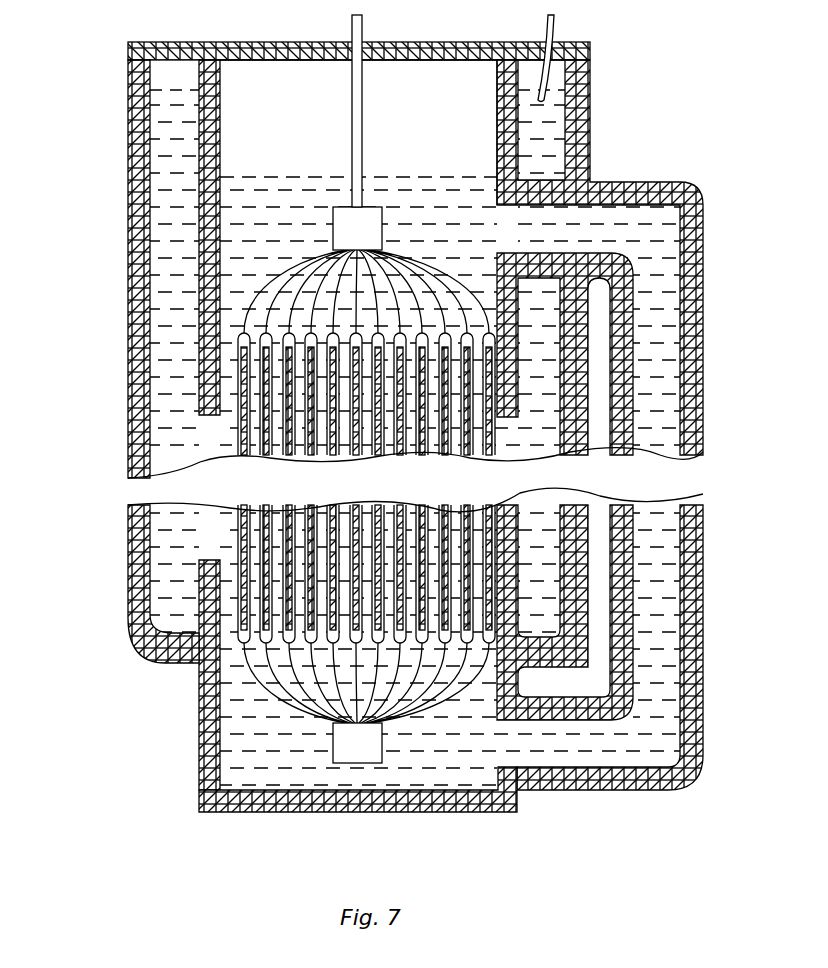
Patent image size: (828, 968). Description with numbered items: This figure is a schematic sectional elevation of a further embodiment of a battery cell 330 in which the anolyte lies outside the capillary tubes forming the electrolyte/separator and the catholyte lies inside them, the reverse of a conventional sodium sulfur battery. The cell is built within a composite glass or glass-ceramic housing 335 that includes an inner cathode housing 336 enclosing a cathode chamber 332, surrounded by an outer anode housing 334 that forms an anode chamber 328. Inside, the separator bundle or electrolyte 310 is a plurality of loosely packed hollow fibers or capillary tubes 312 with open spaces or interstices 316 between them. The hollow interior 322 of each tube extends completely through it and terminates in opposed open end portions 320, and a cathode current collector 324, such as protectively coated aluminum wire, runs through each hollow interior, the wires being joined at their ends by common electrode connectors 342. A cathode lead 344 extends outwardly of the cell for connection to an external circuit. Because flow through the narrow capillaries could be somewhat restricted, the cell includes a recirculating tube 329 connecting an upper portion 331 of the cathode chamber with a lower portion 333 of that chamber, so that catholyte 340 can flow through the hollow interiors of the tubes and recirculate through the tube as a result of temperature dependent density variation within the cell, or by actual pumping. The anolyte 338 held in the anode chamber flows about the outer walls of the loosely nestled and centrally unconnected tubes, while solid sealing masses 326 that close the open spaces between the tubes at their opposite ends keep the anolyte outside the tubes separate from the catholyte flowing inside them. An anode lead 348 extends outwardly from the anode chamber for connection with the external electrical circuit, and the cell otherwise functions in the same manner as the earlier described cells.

The separator bundle 310 is at (504, 507).
The capillary tubes 312 is at (240, 430).
The open spaces 316 is at (442, 456).
The open end portions 320 is at (249, 328).
The hollow interior 322 is at (305, 458).
The cathode current collector 324 is at (316, 254).
The solid sealing masses 326 is at (452, 330).
The anode chamber 328 is at (165, 183).
The recirculating tube 329 is at (650, 765).
The battery cell 330 is at (594, 113).
The upper portion 331 is at (422, 78).
The cathode chamber 332 is at (466, 146).
The lower portion 333 is at (468, 792).
The outer anode housing 334 is at (138, 215).
The housing 335 is at (128, 157).
The inner cathode housing 336 is at (215, 170).
The anolyte 338 is at (175, 88).
The catholyte 340 is at (328, 175).
The common electrode connectors 342 is at (372, 212).
The cathode lead 344 is at (352, 18).
The anode lead 348 is at (548, 22).